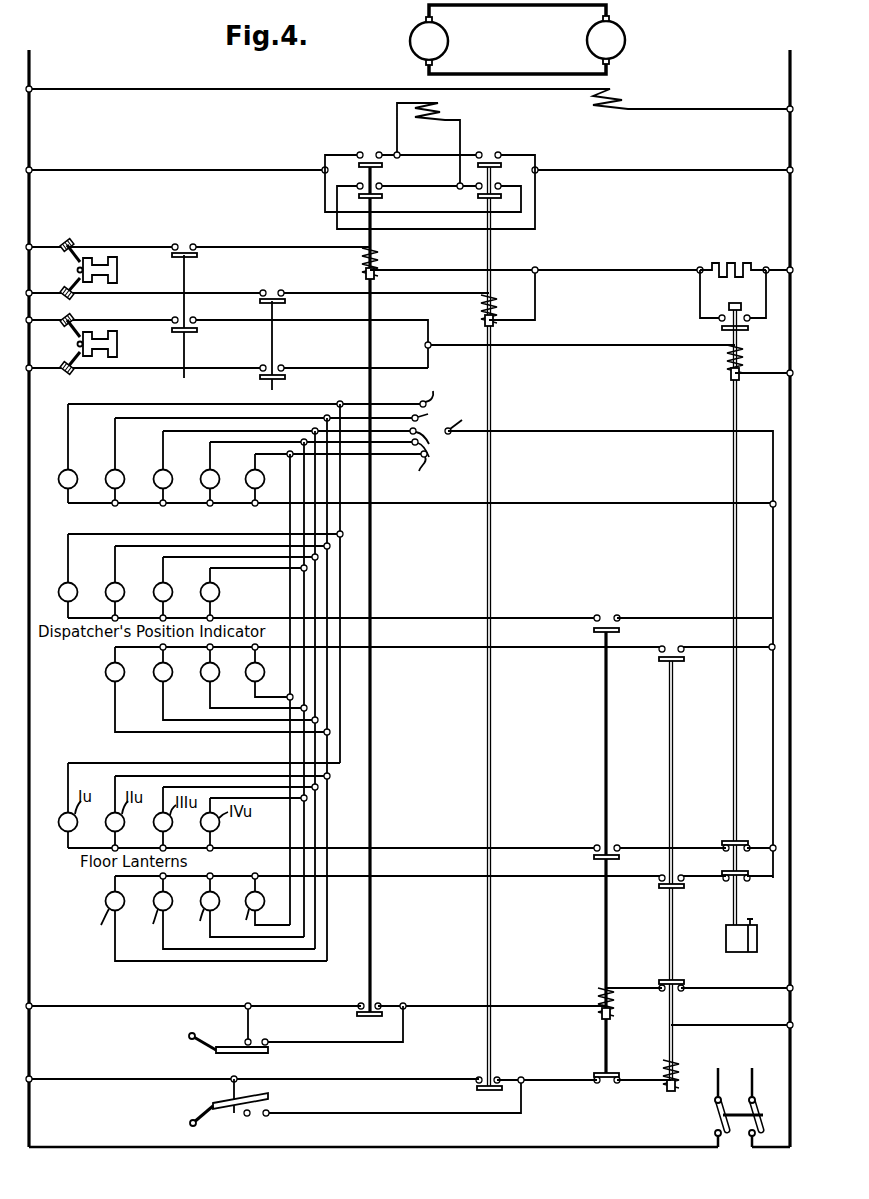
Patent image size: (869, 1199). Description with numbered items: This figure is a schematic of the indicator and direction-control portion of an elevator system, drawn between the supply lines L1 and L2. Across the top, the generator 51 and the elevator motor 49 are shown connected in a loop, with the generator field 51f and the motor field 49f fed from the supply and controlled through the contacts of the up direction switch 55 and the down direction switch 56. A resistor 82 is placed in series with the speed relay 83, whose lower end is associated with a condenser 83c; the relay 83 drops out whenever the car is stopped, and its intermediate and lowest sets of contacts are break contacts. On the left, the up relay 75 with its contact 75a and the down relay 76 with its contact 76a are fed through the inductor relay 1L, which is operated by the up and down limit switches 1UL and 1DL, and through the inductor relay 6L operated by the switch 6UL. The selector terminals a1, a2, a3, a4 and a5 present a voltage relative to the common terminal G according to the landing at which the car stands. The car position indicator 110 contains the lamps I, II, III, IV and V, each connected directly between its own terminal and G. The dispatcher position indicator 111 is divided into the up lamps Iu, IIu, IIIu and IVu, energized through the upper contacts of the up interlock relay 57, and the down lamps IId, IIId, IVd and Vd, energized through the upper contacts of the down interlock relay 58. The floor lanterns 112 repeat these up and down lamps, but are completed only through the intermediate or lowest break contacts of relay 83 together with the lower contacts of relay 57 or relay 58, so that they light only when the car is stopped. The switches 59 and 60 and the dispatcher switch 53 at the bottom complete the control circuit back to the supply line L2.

The supply line L1 is at (29, 62).
The supply line L2 is at (790, 60).
The elevator motor 49 is at (624, 45).
The generator 51 is at (447, 45).
The generator field winding 49f is at (626, 101).
The generator field winding 51f is at (444, 112).
The resistor 82 is at (731, 263).
The speed relay 83 is at (738, 345).
The relay condenser 83c is at (726, 939).
The up direction switch 55 is at (368, 280).
The down direction switch 56 is at (486, 336).
The up interlock relay 57 is at (604, 1041).
The down interlock relay 58 is at (669, 1012).
The switch 59 is at (209, 1047).
The switch 60 is at (215, 1107).
The dispatcher switch 53 is at (715, 1116).
The up relay 75 is at (182, 271).
The relay contact 75a is at (193, 244).
The down relay 76 is at (270, 345).
The relay contact 76a is at (293, 277).
The first floor up limit switch 1UL is at (71, 241).
The first floor down limit switch 1DL is at (65, 288).
The inductor relay 1L is at (118, 270).
The sixth floor up limit switch 6UL is at (72, 319).
The inductor relay 6L is at (118, 345).
The terminal a1 is at (421, 394).
The terminal a2 is at (430, 415).
The terminal a3 is at (430, 441).
The terminal a4 is at (431, 454).
The terminal a5 is at (412, 465).
The terminal G is at (458, 424).
The car position indicator 110 is at (403, 464).
The dispatcher's position indicator 111 is at (406, 699).
The floor lanterns 112 is at (78, 903).
The lamp I is at (75, 472).
The lamp II is at (122, 472).
The lamp III is at (170, 472).
The lamp IV is at (217, 472).
The lamp V is at (263, 475).
The up lamp Iu is at (75, 584).
The up lamp IIu is at (122, 584).
The up lamp IIIu is at (170, 585).
The up lamp IVu is at (219, 588).
The down lamp IId is at (109, 680).
The down lamp IIId is at (158, 680).
The down lamp IVd is at (204, 680).
The down lamp Vd is at (249, 680).